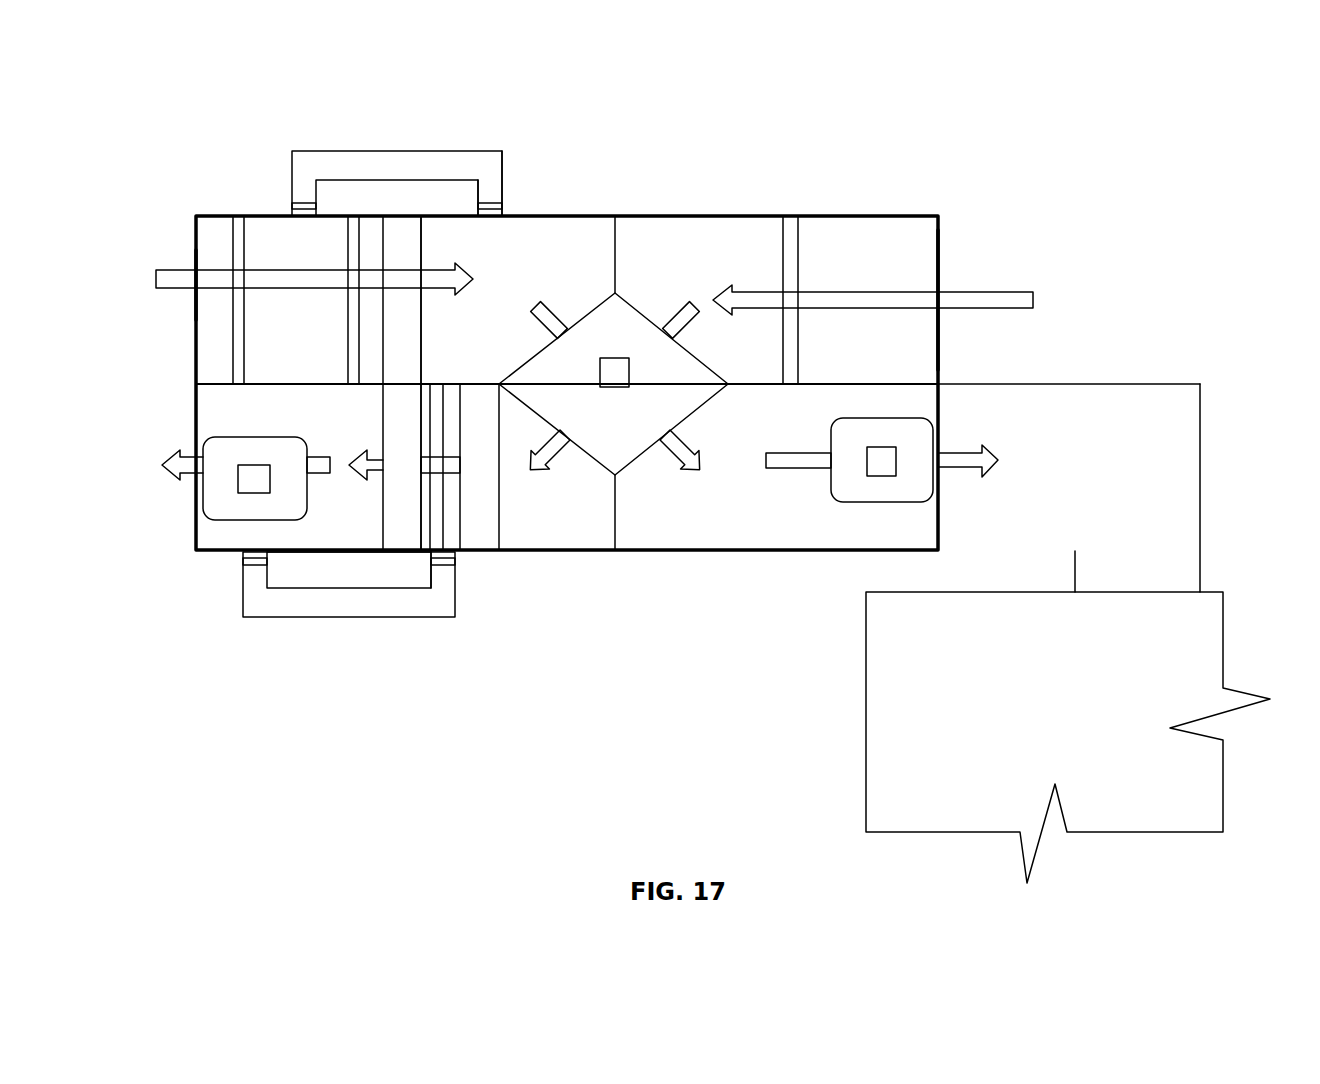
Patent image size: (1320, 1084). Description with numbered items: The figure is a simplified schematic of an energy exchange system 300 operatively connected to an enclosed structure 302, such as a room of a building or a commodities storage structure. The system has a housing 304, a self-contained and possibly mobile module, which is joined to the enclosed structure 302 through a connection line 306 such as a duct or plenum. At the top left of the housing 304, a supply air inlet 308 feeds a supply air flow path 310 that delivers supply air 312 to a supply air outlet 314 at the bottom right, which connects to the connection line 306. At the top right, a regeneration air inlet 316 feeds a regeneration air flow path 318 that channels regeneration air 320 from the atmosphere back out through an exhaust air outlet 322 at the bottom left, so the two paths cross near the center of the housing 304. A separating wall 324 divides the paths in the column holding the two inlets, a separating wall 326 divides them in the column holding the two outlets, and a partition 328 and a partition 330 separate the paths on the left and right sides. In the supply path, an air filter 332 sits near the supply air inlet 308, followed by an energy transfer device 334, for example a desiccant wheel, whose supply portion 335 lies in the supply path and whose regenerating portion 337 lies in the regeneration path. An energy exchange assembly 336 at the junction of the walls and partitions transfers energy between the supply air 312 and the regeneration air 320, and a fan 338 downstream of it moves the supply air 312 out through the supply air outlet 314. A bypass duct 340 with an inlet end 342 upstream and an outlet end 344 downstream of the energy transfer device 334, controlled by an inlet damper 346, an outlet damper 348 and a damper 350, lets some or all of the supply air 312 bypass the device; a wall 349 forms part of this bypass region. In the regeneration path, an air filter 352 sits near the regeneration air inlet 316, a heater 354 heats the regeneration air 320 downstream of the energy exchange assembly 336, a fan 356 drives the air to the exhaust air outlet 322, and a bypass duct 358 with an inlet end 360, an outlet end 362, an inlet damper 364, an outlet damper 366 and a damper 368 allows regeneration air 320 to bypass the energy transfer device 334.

The energy exchange system 300 is at (232, 148).
The enclosed structure 302 is at (921, 671).
The housing 304 is at (207, 214).
The connection line 306 is at (1063, 443).
The supply air inlet 308 is at (196, 325).
The supply air flow path 310 is at (274, 288).
The supply air 312 is at (522, 277).
The supply air outlet 314 is at (940, 436).
The regeneration air inlet 316 is at (940, 249).
The regeneration air flow path 318 is at (822, 292).
The regeneration air 320 is at (657, 289).
The exhaust air outlet 322 is at (196, 532).
The separating wall 324 is at (616, 240).
The separating wall 326 is at (612, 531).
The partition 328 is at (257, 385).
The partition 330 is at (886, 383).
The air filter 332 is at (242, 243).
The energy transfer device 334 is at (398, 240).
The supply portion 335 is at (410, 320).
The energy exchange assembly 336 is at (588, 342).
The regenerating portion 337 is at (382, 415).
The fan 338 is at (848, 505).
The bypass duct 340 is at (375, 150).
The inlet end 342 is at (318, 217).
The outlet end 344 is at (483, 217).
The inlet damper 346 is at (302, 203).
The outlet damper 348 is at (490, 201).
The bypass housing wall 349 is at (503, 200).
The damper 350 is at (358, 232).
The air filter 352 is at (790, 232).
The heater 354 is at (480, 528).
The fan 356 is at (228, 522).
The bypass duct 358 is at (347, 618).
The inlet end 360 is at (431, 562).
The outlet end 362 is at (268, 556).
The inlet damper 364 is at (445, 566).
The outlet damper 366 is at (253, 566).
The damper 368 is at (443, 407).